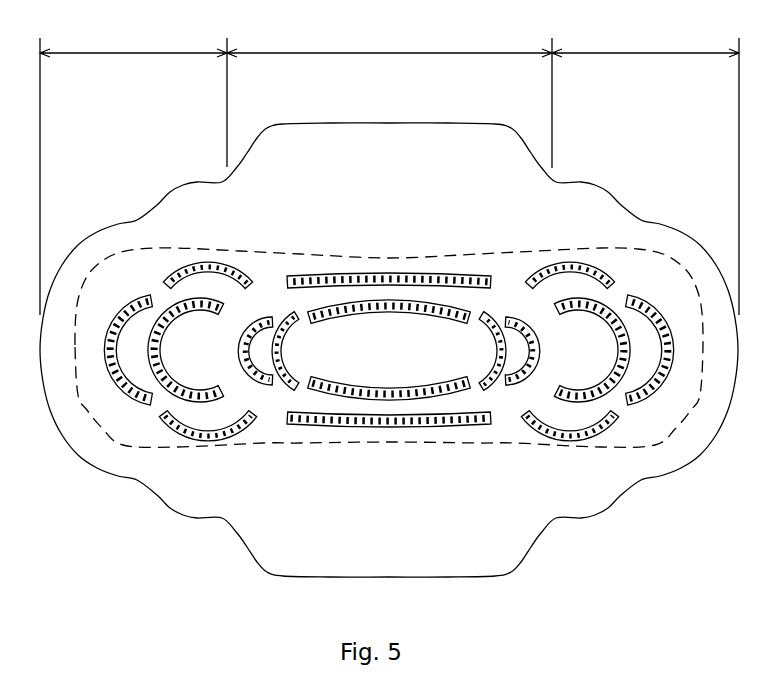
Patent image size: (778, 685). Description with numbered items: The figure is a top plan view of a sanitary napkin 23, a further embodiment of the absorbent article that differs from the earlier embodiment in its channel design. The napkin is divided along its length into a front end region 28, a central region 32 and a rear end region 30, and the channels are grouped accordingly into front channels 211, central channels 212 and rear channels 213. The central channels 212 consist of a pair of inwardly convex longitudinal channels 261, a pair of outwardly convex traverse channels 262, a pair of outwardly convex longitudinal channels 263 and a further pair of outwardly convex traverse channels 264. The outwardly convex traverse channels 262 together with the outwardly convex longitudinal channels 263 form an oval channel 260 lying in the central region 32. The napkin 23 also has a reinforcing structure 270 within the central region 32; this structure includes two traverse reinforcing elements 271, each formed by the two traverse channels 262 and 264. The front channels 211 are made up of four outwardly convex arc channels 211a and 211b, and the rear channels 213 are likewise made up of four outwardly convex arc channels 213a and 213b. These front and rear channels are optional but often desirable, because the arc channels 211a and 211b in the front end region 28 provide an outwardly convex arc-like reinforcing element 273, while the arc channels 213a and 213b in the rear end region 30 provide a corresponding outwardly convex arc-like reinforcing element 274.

The sanitary napkin 23 is at (97, 538).
The front end region 28 is at (133, 172).
The central region 32 is at (389, 43).
The rear end region 30 is at (645, 172).
The front channels 211 is at (176, 369).
The outwardly convex arc channels 211a is at (195, 262).
The outwardly convex arc channels 211b is at (150, 344).
The central channels 212 is at (389, 348).
The rear channels 213 is at (597, 356).
The outwardly convex arc channels 213a is at (570, 262).
The outwardly convex arc channels 213b is at (615, 325).
The oval channel 260 is at (389, 401).
The inwardly convex longitudinal channels 261 is at (462, 275).
The outwardly convex traverse channels 262 is at (258, 328).
The outwardly convex longitudinal channels 263 is at (358, 312).
The outwardly convex traverse channels 264 is at (283, 344).
The reinforcing structure 270 is at (397, 343).
The traverse reinforcing elements 271 is at (263, 350).
The outwardly convex arc like reinforcing element 273 is at (133, 360).
The outwardly convex arc like reinforcing element 274 is at (645, 360).